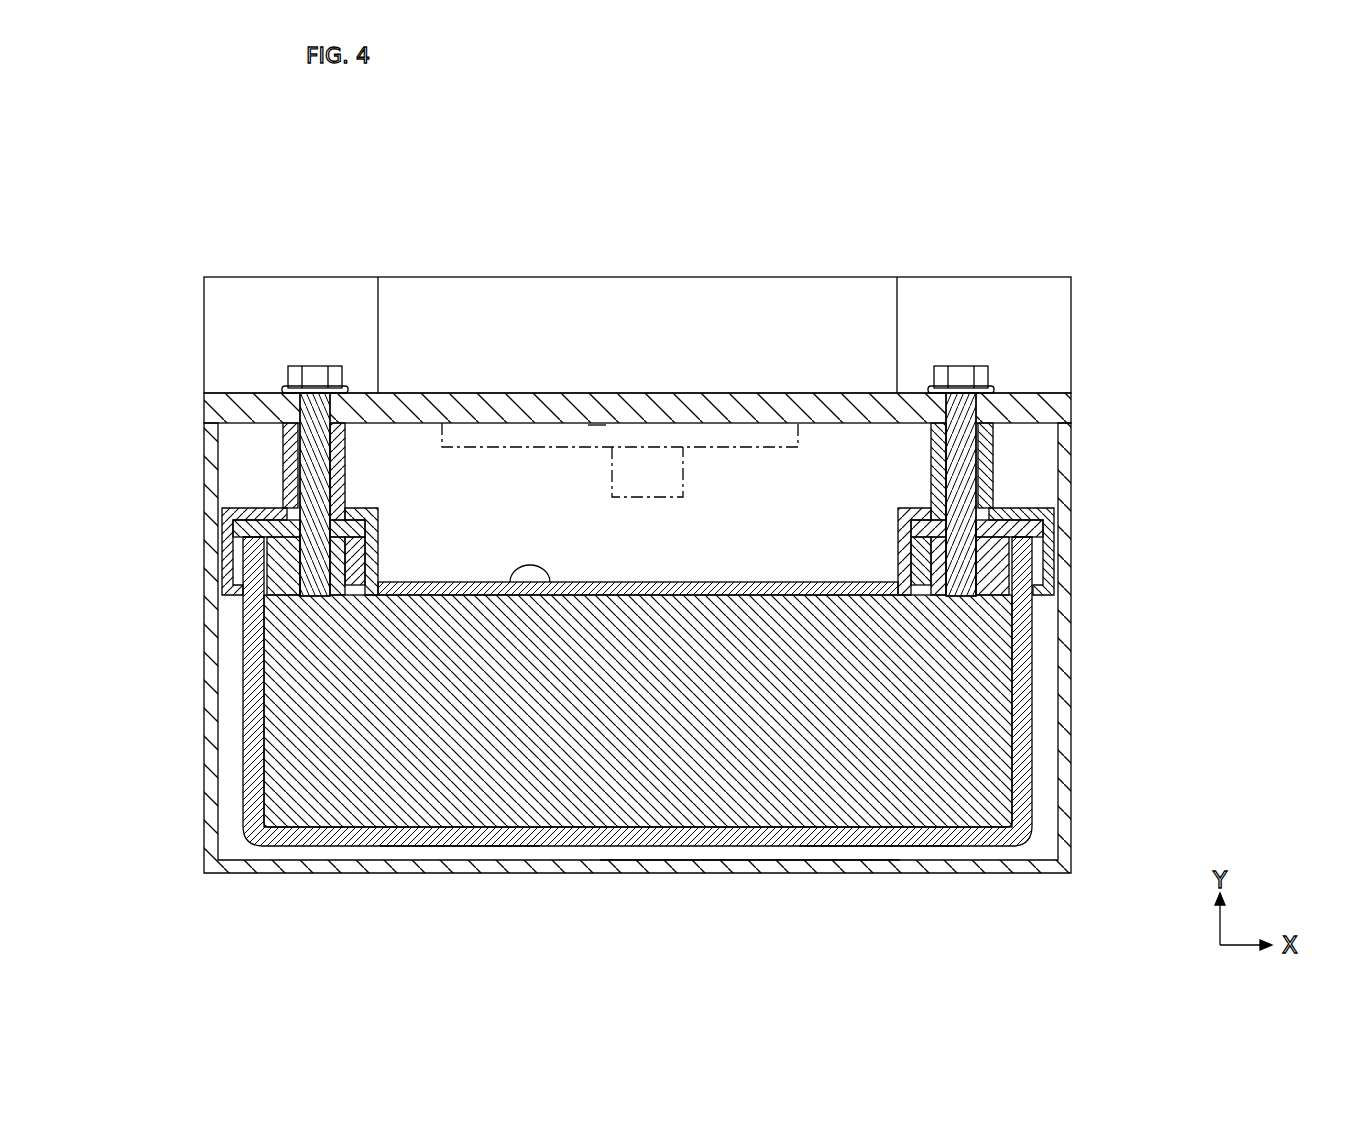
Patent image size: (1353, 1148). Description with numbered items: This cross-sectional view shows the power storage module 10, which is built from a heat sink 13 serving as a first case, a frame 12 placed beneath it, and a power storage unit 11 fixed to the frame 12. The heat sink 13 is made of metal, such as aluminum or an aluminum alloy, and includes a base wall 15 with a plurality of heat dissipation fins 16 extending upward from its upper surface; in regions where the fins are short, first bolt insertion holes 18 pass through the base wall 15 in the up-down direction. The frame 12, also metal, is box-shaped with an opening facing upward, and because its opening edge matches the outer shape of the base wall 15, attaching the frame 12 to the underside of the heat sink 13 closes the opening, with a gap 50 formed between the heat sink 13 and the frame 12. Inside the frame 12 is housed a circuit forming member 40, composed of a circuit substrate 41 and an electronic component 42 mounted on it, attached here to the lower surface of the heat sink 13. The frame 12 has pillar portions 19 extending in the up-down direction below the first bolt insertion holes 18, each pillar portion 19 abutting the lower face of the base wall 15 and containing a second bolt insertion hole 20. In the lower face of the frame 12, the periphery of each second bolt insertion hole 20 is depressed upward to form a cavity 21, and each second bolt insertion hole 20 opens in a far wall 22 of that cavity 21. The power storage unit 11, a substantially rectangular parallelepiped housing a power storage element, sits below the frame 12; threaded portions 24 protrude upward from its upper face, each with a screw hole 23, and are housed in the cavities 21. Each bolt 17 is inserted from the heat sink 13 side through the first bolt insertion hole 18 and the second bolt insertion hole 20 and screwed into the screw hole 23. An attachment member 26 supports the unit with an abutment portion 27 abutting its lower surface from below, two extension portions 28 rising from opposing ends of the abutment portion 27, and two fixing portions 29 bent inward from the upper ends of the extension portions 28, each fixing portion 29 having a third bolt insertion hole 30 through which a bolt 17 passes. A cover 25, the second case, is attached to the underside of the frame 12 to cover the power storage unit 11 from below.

The power storage module 10 is at (1099, 227).
The power storage unit 11 is at (972, 735).
The frame 12 is at (206, 471).
The heat sink 13 is at (1061, 361).
The base wall 15 is at (1066, 410).
The heat dissipation fin 16 is at (681, 305).
The bolt 17 is at (315, 377).
The first bolt insertion hole 18 is at (348, 391).
The pillar portion 19 is at (283, 456).
The second bolt insertion hole 20 is at (343, 458).
The cavity 21 is at (226, 572).
The far wall 22 is at (255, 508).
The screw hole 23 is at (317, 597).
The threaded portion 24 is at (380, 553).
The cover 25 is at (737, 876).
The attachment member 26 is at (880, 847).
The abutment portion 27 is at (459, 846).
The extension portion 28 is at (250, 771).
The fixing portion 29 is at (262, 575).
The third bolt insertion hole 30 is at (343, 493).
The circuit forming member 40 is at (705, 435).
The circuit substrate 41 is at (597, 435).
The electronic component 42 is at (643, 467).
The gap 50 is at (548, 585).